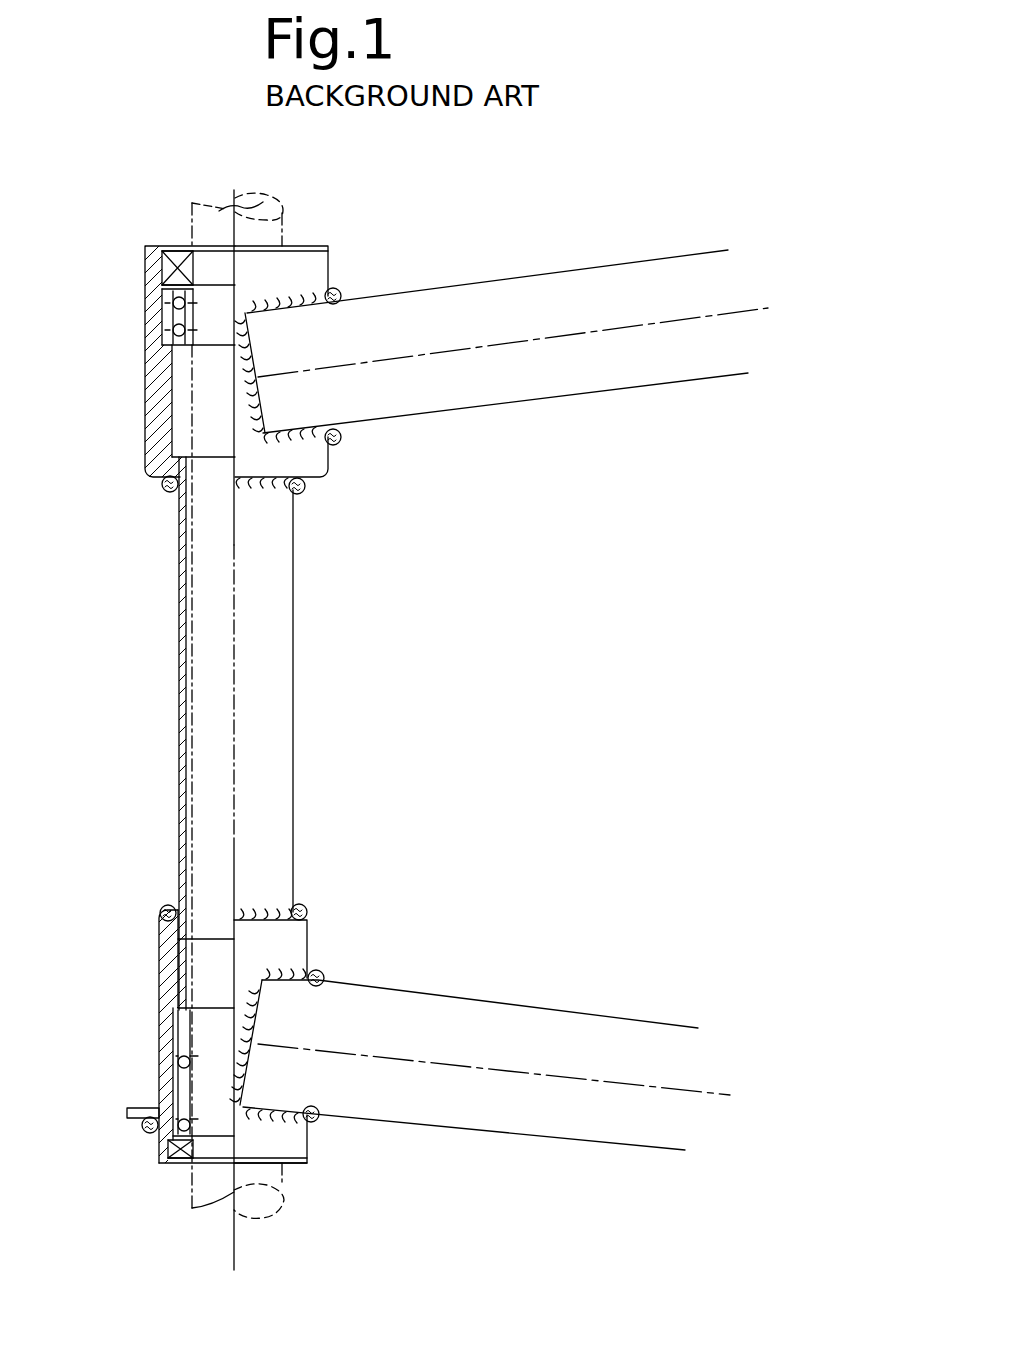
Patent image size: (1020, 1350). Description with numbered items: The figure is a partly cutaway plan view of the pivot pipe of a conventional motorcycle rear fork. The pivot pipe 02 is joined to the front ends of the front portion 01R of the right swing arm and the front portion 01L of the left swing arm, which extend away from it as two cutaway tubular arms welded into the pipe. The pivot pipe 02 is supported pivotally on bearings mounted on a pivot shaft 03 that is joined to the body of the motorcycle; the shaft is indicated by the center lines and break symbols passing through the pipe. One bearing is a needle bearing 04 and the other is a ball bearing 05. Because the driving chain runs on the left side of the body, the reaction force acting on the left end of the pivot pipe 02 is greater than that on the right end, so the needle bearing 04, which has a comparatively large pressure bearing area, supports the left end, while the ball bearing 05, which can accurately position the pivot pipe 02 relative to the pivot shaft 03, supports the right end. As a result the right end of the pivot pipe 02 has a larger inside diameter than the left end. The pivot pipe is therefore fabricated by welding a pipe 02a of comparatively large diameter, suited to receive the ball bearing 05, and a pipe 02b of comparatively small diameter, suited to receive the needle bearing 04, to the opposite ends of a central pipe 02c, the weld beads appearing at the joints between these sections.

The front portion of right swing arm 01R is at (494, 289).
The front portion of left swing arm 01L is at (514, 1133).
The pivot pipe 02 is at (148, 626).
The pipe having comparatively large diameter 02a is at (318, 462).
The pipe having comparatively small diameter 02b is at (300, 950).
The pipe 02c is at (295, 800).
The pivot shaft 03 is at (283, 212).
The needle bearing 04 is at (182, 1088).
The ball bearing 05 is at (167, 307).